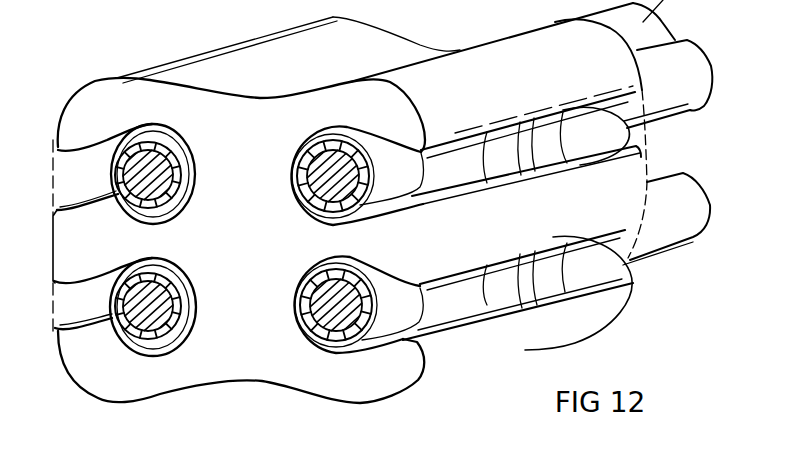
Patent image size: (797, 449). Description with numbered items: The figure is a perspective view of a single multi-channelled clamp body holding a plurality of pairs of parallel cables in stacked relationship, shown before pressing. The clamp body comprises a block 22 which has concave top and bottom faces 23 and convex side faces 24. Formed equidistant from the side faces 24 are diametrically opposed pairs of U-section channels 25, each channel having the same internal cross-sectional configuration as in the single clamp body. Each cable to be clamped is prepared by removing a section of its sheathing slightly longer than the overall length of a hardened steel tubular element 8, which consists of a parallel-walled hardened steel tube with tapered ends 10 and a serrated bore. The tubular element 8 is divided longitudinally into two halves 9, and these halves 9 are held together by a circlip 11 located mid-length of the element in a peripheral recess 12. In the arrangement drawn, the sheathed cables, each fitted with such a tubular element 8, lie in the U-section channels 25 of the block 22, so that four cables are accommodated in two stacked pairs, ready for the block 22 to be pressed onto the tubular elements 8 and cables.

The hardened steel tubular element 8 is at (588, 131).
The halves 9 is at (422, 201).
The tapered ends 10 is at (471, 182).
The circlip 11 is at (531, 157).
The peripheral recess 12 is at (519, 163).
The block 22 is at (403, 50).
The concave top and bottom faces 23 is at (233, 97).
The convex side faces 24 is at (53, 203).
The U-section channels 25 is at (110, 203).